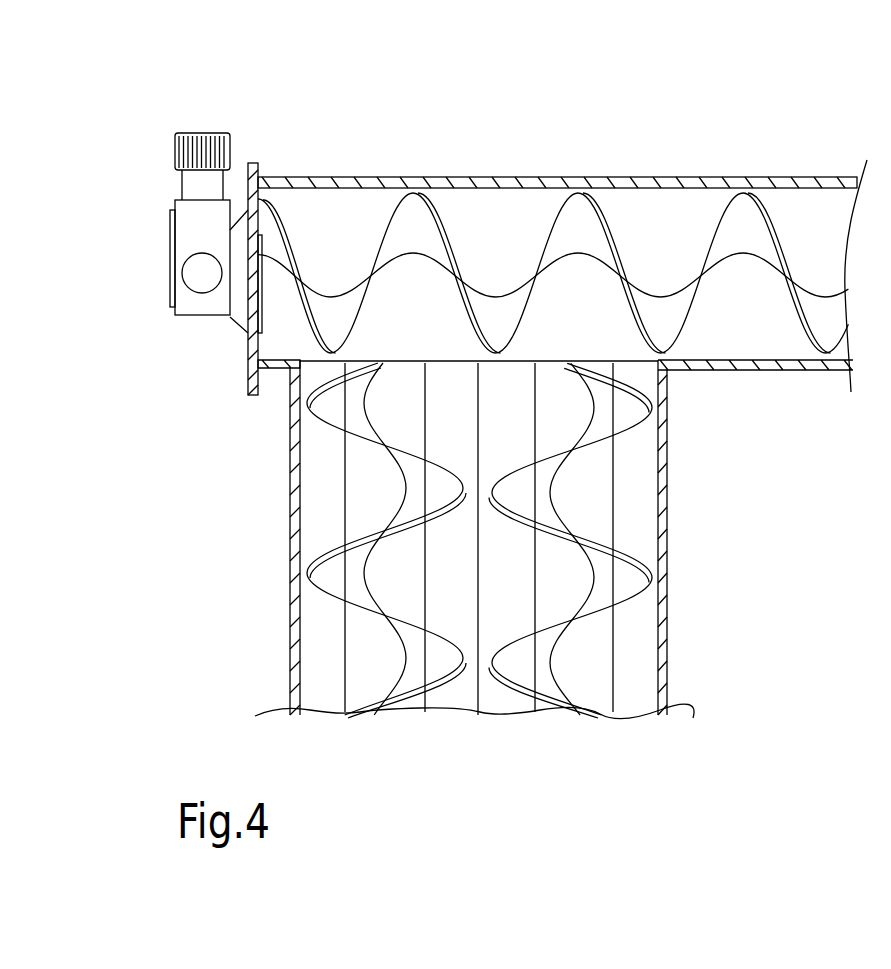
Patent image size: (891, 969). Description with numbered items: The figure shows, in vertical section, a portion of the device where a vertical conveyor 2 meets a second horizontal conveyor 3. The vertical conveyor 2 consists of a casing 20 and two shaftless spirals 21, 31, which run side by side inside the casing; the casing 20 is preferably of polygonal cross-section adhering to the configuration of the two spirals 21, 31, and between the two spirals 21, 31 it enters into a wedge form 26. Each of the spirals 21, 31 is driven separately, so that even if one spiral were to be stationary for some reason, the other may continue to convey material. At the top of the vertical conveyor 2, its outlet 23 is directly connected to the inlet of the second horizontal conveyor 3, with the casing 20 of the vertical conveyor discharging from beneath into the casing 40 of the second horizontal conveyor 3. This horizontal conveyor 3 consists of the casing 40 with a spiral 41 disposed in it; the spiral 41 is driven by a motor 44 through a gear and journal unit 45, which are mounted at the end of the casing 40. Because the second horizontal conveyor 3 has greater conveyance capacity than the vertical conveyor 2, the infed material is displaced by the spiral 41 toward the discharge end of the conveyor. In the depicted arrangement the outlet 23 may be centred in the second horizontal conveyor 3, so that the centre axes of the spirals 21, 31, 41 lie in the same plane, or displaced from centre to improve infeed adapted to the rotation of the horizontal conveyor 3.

The vertical conveyor 2 is at (667, 587).
The second horizontal conveyor 3 is at (638, 177).
The casing 20 is at (292, 505).
The shaftless spiral 21 is at (315, 578).
The outlet 23 is at (414, 404).
The wedge form 26 is at (490, 718).
The shaftless spiral 31 is at (642, 560).
The casing 40 is at (315, 177).
The spiral 41 is at (437, 212).
The motor 44 is at (212, 132).
The gear and journal unit 45 is at (192, 310).